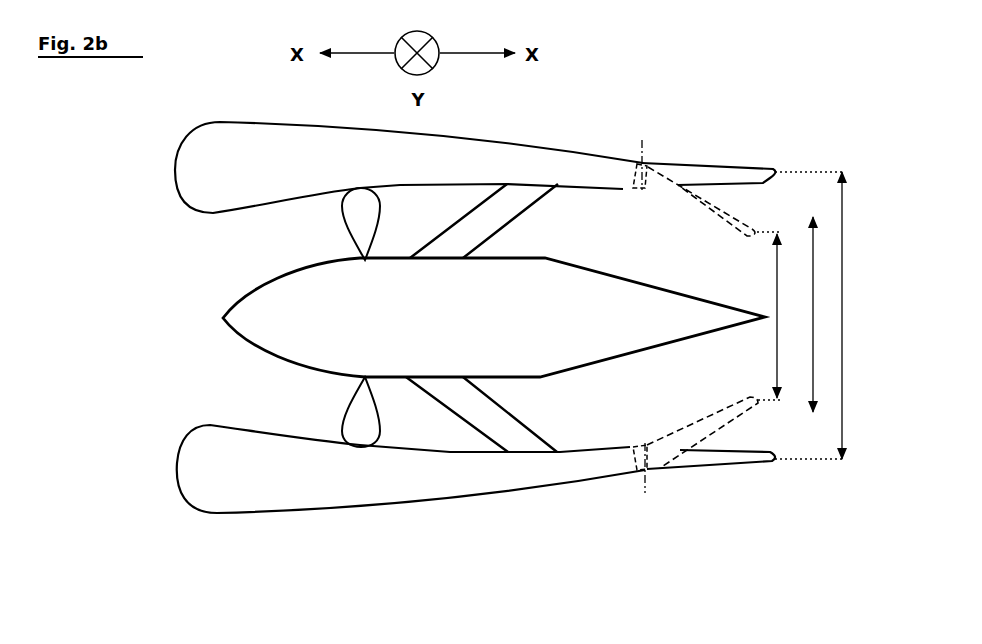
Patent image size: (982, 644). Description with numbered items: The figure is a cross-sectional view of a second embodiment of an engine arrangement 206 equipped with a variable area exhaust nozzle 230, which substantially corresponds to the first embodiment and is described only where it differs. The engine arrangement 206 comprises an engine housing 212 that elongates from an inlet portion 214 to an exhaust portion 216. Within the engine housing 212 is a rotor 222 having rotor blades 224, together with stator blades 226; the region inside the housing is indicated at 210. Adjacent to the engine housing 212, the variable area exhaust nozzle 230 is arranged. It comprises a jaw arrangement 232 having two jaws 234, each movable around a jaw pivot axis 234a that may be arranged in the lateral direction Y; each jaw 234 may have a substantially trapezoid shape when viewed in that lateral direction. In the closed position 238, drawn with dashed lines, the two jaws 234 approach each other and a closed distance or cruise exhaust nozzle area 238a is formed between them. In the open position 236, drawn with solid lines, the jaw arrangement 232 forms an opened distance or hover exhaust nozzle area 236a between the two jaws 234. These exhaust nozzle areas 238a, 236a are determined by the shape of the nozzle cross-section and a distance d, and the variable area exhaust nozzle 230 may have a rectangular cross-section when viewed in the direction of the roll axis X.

The engine arrangement 206 is at (153, 258).
The flow channel 210 is at (178, 333).
The engine housing 212 is at (170, 492).
The inlet portion 214 is at (222, 353).
The exhaust portion 216 is at (635, 438).
The rotor 222 is at (378, 311).
The rotor blades 224 is at (345, 242).
The stator blades 226 is at (502, 207).
The variable area exhaust nozzle 230 is at (735, 155).
The jaw arrangement 232 is at (675, 155).
The jaw 234 is at (775, 168).
The jaw pivot axis 234a is at (633, 153).
The open position 236 is at (753, 465).
The hover exhaust nozzle area 236a is at (872, 315).
The closed position 238 is at (735, 420).
The cruise exhaust nozzle area 238a is at (751, 316).
The distance d is at (819, 302).